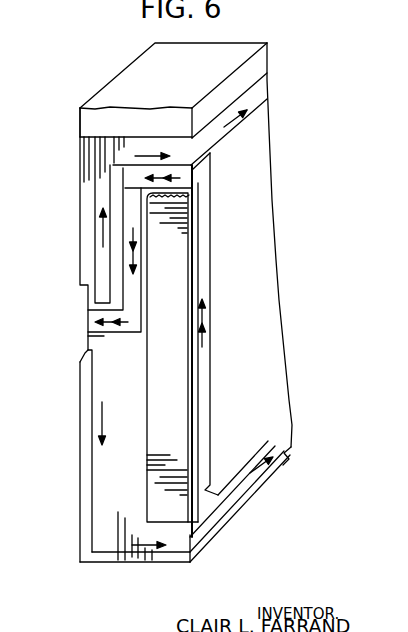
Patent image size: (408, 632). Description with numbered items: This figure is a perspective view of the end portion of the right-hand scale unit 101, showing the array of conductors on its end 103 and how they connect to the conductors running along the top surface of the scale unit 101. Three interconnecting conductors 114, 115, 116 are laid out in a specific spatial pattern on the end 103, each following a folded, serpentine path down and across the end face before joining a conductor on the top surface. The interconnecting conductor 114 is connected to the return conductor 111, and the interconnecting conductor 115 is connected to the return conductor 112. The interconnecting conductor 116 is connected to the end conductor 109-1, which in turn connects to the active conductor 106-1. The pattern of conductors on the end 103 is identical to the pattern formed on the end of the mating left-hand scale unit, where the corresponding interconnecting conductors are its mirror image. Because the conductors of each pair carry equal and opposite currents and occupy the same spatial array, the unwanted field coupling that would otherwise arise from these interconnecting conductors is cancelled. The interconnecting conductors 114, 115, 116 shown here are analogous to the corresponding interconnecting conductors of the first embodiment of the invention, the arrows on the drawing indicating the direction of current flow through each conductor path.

The scale unit 101 is at (77, 98).
The end 103 is at (90, 121).
The return conductor 111 is at (256, 95).
The end conductor 109-1 is at (195, 174).
The interconnecting conductor 114 is at (98, 193).
The interconnecting conductor 116 is at (127, 288).
The active conductor 106-1 is at (203, 380).
The return conductor 112 is at (272, 453).
The interconnecting conductor 115 is at (107, 545).